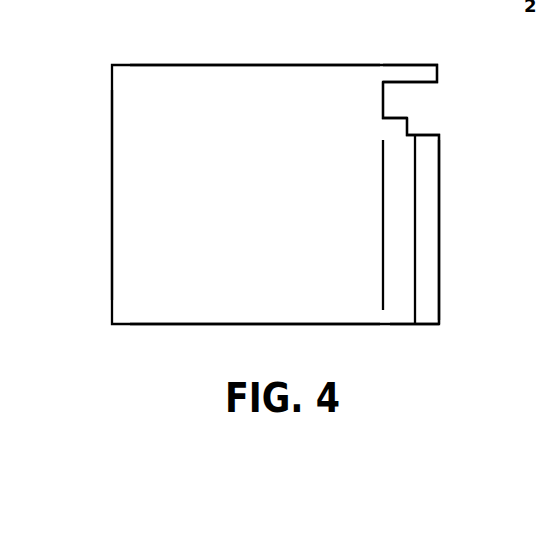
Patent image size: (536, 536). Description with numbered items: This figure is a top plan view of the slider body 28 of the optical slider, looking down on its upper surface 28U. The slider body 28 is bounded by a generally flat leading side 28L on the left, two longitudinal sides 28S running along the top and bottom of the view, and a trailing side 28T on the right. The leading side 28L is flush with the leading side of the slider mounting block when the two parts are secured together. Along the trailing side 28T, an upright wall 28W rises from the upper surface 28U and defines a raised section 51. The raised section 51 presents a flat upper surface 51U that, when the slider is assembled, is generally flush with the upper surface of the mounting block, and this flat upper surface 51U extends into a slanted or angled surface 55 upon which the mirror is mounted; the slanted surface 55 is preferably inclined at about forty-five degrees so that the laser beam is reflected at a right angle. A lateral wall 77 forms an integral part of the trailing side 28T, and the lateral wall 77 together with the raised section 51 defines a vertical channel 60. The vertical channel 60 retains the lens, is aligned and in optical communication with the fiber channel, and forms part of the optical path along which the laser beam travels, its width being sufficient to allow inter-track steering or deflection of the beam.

The slider body 28 is at (102, 135).
The leading side 28L is at (112, 232).
The longitudinal sides 28S is at (254, 62).
The upper surface 28U is at (282, 212).
The upright wall 28W is at (383, 292).
The trailing side 28T is at (421, 336).
The lateral wall 77 is at (405, 72).
The vertical channel 60 is at (414, 83).
The raised section 51 is at (430, 121).
The flat upper surface 51U is at (405, 262).
The slanted surface 55 is at (435, 295).